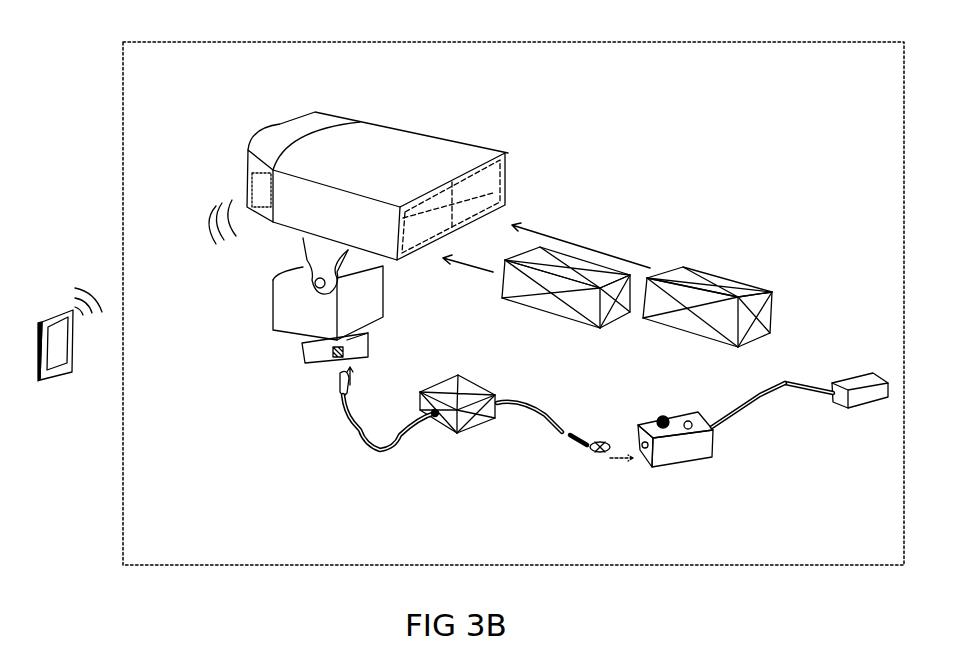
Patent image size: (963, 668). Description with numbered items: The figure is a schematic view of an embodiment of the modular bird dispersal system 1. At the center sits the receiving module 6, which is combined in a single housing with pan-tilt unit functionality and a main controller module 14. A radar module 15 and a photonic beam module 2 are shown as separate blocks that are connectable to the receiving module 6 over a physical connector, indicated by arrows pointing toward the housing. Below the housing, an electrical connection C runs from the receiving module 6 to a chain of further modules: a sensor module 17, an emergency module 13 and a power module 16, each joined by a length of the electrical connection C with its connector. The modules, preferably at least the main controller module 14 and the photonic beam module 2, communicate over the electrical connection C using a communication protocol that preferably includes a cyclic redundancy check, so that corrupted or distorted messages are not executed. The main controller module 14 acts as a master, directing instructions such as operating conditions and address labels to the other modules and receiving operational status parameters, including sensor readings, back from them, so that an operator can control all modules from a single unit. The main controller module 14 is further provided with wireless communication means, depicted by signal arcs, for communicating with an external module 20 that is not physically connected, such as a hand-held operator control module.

The modular bird dispersal system 1 is at (112, 155).
The receiving module 6 is at (443, 122).
The main controller module 14 is at (253, 190).
The external module 20 is at (57, 375).
The photonic beam module 2 is at (548, 303).
The radar module 15 is at (692, 322).
The sensor module 17 is at (472, 435).
The emergency module 13 is at (682, 453).
The power module 16 is at (863, 398).
The electrical connection C is at (360, 430).